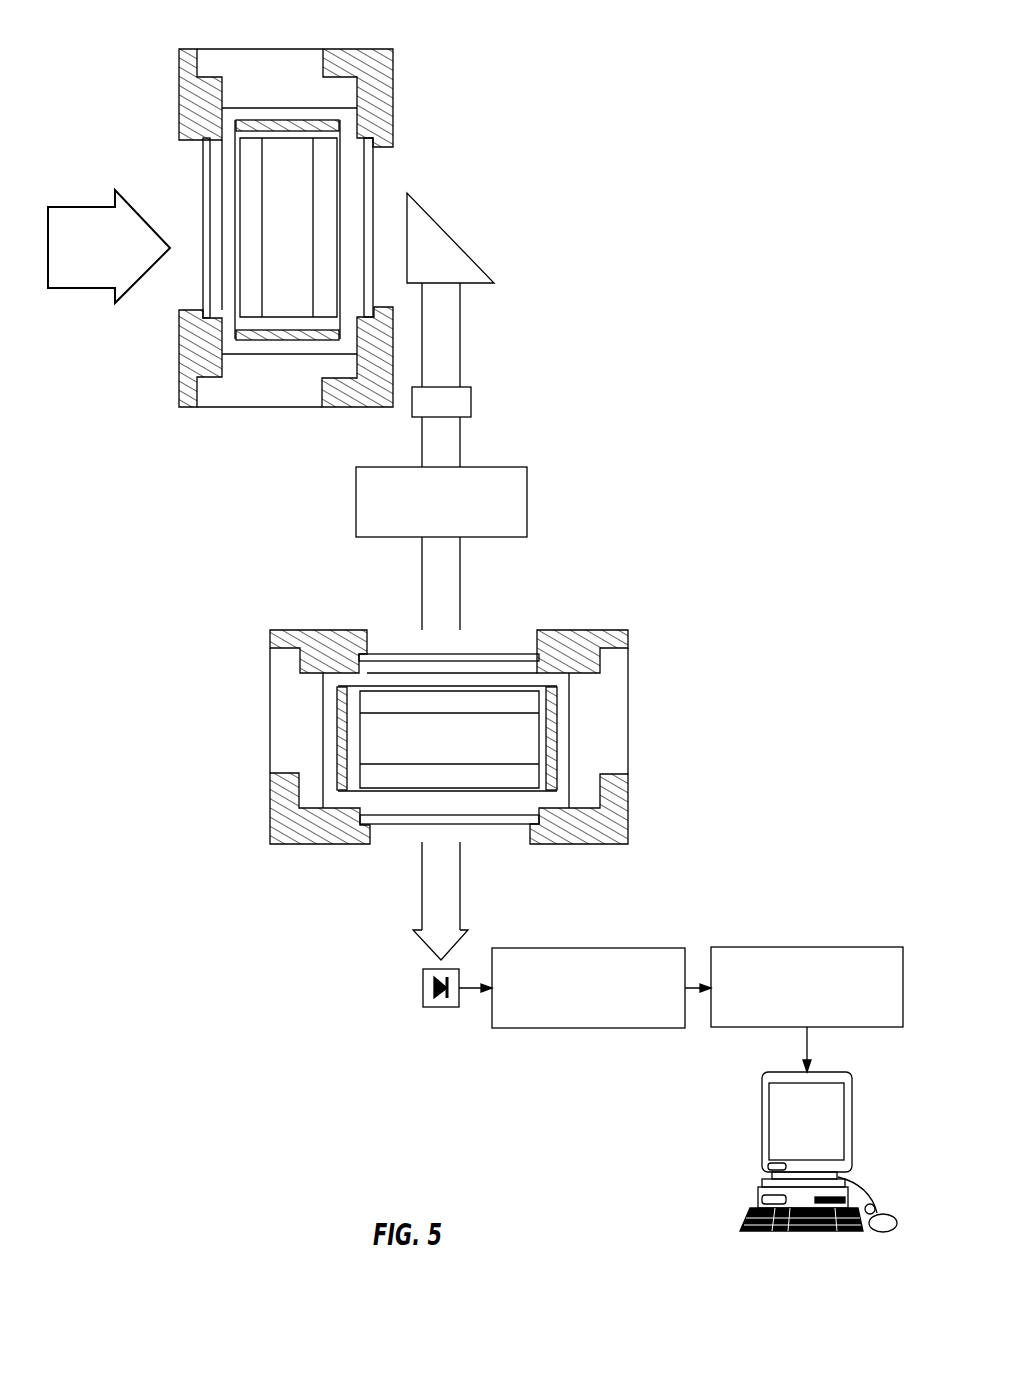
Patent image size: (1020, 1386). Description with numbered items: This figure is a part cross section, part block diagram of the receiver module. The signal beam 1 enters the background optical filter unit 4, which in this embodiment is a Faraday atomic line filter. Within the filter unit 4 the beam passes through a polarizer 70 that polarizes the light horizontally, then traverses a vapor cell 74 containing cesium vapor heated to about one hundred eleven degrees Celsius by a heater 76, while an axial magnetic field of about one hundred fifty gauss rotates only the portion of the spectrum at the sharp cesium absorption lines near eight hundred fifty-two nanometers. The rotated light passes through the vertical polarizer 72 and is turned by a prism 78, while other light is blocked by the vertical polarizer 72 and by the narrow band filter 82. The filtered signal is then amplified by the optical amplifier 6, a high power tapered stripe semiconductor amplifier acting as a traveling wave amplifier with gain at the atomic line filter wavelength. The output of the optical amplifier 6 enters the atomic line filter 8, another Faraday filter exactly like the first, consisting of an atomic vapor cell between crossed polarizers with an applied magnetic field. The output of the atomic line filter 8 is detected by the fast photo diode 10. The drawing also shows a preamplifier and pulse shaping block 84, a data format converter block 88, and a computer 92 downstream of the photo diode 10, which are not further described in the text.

The signal beam 1 is at (98, 205).
The background optical filter unit 4 is at (482, 40).
The optical amplifier 6 is at (527, 500).
The atomic line filter 8 is at (690, 627).
The fast photo diode 10 is at (423, 977).
The polarizer 70 is at (202, 268).
The vertical polarizer 72 is at (376, 177).
The vapor cell 74 is at (240, 242).
The heater 76 is at (253, 118).
The prism 78 is at (453, 235).
The 852 nm narrow band filter 82 is at (471, 397).
The preamplifier/pulse shaping circuit 84 is at (588, 948).
The data format converter 88 is at (808, 947).
The computer 92 is at (758, 1123).